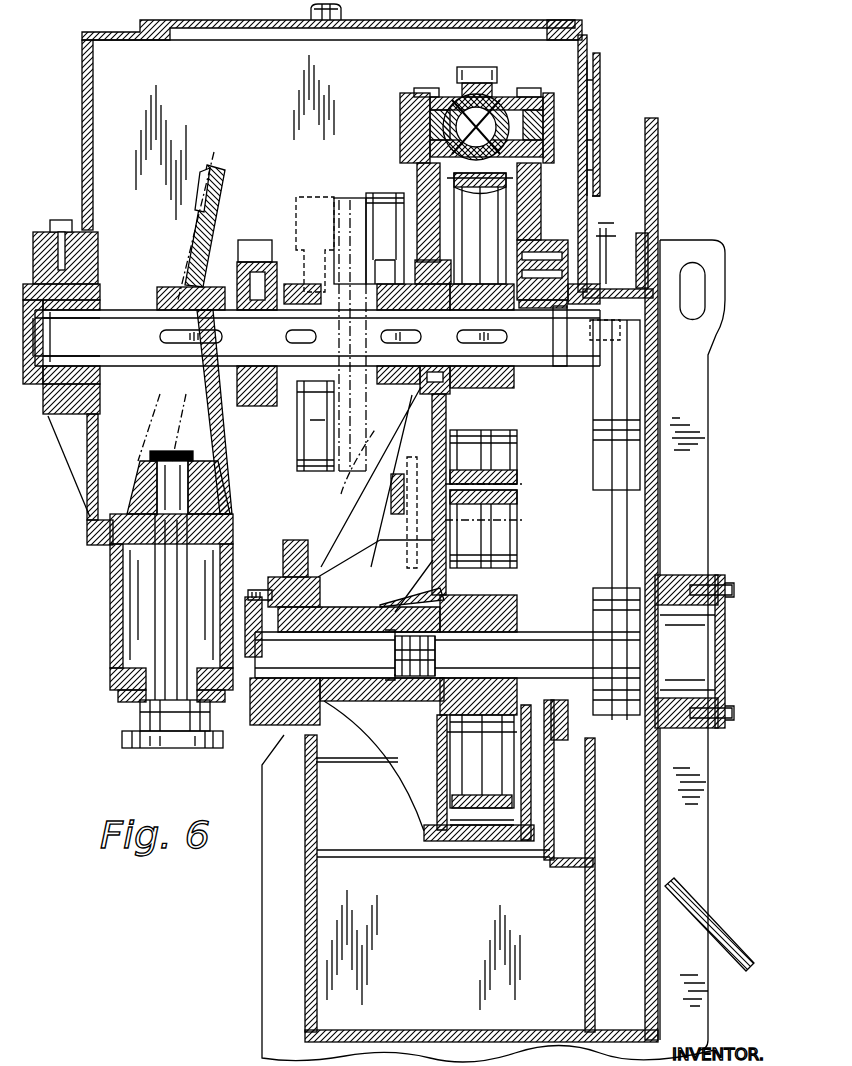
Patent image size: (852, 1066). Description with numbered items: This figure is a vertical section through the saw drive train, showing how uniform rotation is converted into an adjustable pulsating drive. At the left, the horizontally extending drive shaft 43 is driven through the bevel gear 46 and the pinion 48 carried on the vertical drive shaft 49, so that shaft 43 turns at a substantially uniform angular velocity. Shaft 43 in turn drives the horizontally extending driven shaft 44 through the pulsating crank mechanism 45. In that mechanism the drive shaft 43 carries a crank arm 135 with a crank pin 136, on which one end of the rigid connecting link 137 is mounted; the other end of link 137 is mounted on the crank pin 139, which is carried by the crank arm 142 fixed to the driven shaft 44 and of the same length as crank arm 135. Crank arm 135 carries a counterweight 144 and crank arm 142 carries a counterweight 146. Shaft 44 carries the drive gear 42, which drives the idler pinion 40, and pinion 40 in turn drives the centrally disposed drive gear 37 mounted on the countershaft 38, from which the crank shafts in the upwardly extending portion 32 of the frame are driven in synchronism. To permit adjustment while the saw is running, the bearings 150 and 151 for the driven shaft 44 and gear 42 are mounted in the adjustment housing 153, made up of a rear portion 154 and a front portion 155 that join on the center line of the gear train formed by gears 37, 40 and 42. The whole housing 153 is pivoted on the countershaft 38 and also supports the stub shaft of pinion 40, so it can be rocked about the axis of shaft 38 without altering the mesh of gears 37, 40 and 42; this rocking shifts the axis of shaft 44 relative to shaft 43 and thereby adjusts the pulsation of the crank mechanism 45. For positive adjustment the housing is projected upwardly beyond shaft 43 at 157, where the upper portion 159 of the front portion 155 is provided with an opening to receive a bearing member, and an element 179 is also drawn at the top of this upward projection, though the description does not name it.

The upwardly extending portion 32 is at (662, 497).
The drive gear 37 is at (498, 760).
The countershaft 38 is at (515, 652).
The idler pinion 40 is at (538, 520).
The drive gear 42 is at (504, 231).
The drive shaft 43 is at (136, 330).
The driven shaft 44 is at (512, 350).
The pulsating crank mechanism 45 is at (349, 188).
The bevel gear 46 is at (222, 190).
The pinion 48 is at (137, 492).
The vertical drive shaft 49 is at (178, 603).
The crank arm 135 is at (300, 224).
The crank pin 136 is at (325, 195).
The connecting link 137 is at (364, 328).
The crank pin 139 is at (343, 474).
The crank arm 142 is at (392, 478).
The counterweight 144 is at (322, 450).
The counterweight 146 is at (400, 224).
The bearing 150 is at (427, 320).
The bearing 151 is at (566, 300).
The adjustment housing 153 is at (545, 206).
The rear portion 154 is at (412, 735).
The front portion 155 is at (530, 226).
The upward projection of housing 157 is at (418, 88).
The upper portion 159 is at (522, 90).
The universal joint 179 is at (500, 95).